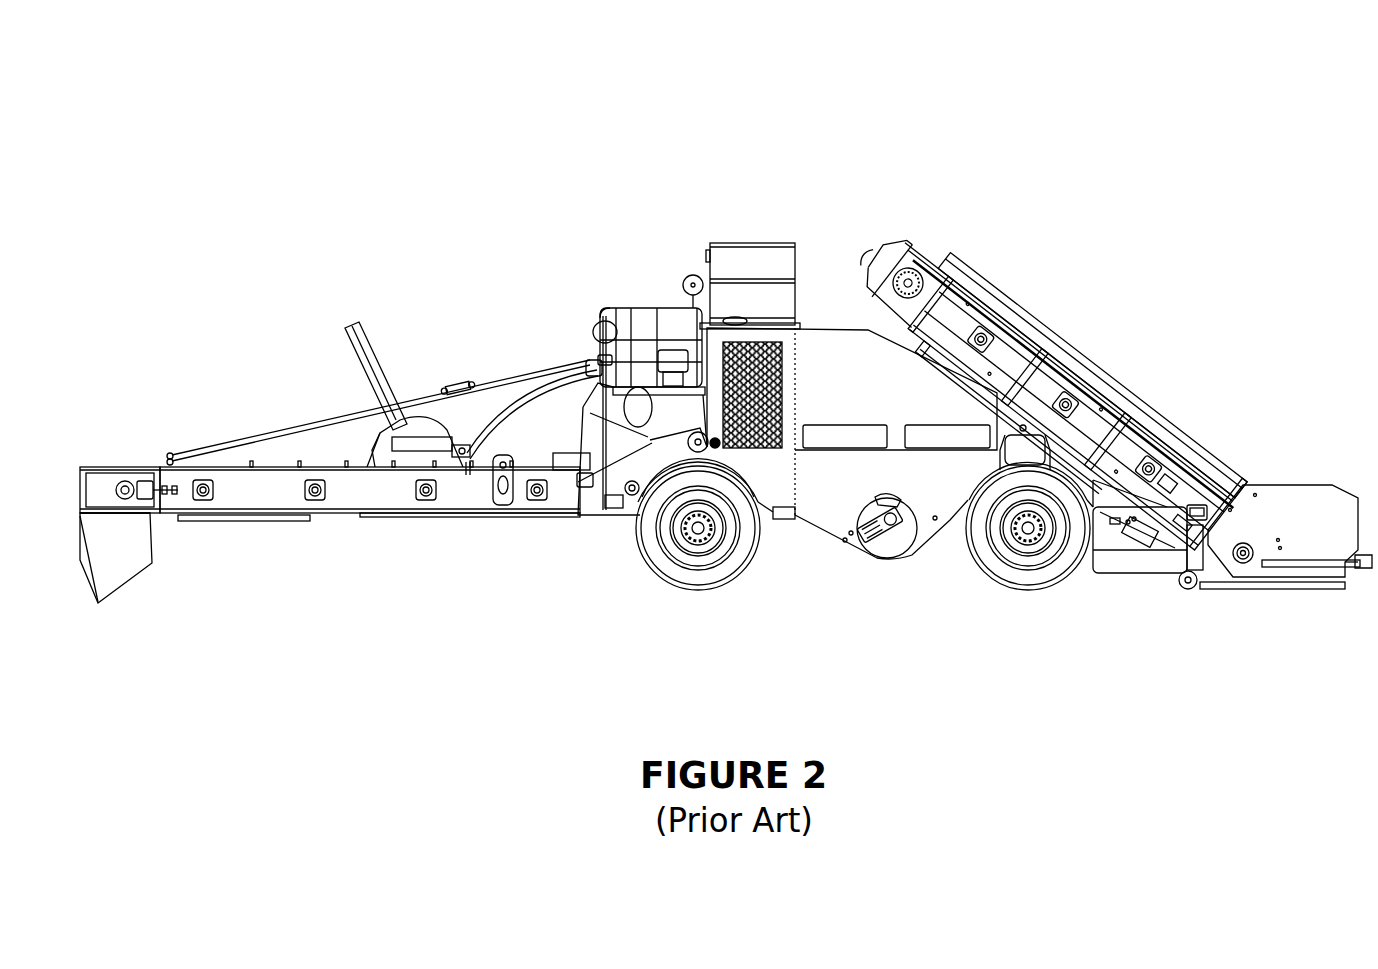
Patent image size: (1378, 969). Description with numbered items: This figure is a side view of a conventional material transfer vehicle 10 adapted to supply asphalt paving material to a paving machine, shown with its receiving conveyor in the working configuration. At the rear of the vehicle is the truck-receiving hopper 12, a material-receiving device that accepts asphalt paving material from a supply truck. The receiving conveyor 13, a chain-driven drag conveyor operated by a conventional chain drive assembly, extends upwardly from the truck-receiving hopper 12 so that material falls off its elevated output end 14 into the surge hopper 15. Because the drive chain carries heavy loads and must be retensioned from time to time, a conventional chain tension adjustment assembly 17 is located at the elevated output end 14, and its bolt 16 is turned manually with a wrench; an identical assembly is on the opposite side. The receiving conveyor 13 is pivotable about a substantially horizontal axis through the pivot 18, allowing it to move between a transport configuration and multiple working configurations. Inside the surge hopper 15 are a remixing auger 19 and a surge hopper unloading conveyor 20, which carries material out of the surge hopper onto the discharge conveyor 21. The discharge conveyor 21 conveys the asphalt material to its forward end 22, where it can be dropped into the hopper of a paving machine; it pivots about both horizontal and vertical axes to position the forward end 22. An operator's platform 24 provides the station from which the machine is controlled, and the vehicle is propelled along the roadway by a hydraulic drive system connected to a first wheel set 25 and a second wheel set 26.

The material transfer vehicle 10 is at (900, 108).
The truck-receiving hopper 12 is at (1290, 505).
The receiving conveyor 13 is at (1030, 372).
The elevated output end 14 is at (945, 297).
The surge hopper 15 is at (842, 316).
The bolt 16 is at (1082, 372).
The chain tension adjustment assembly 17 is at (1011, 417).
The pivot 18 is at (1016, 424).
The remixing auger 19 is at (885, 543).
The surge hopper unloading conveyor 20 is at (665, 436).
The discharge conveyor 21 is at (397, 497).
The forward end 22 is at (97, 443).
The operator's platform 24 is at (672, 296).
The first wheel set 25 is at (681, 596).
The second wheel set 26 is at (1019, 604).